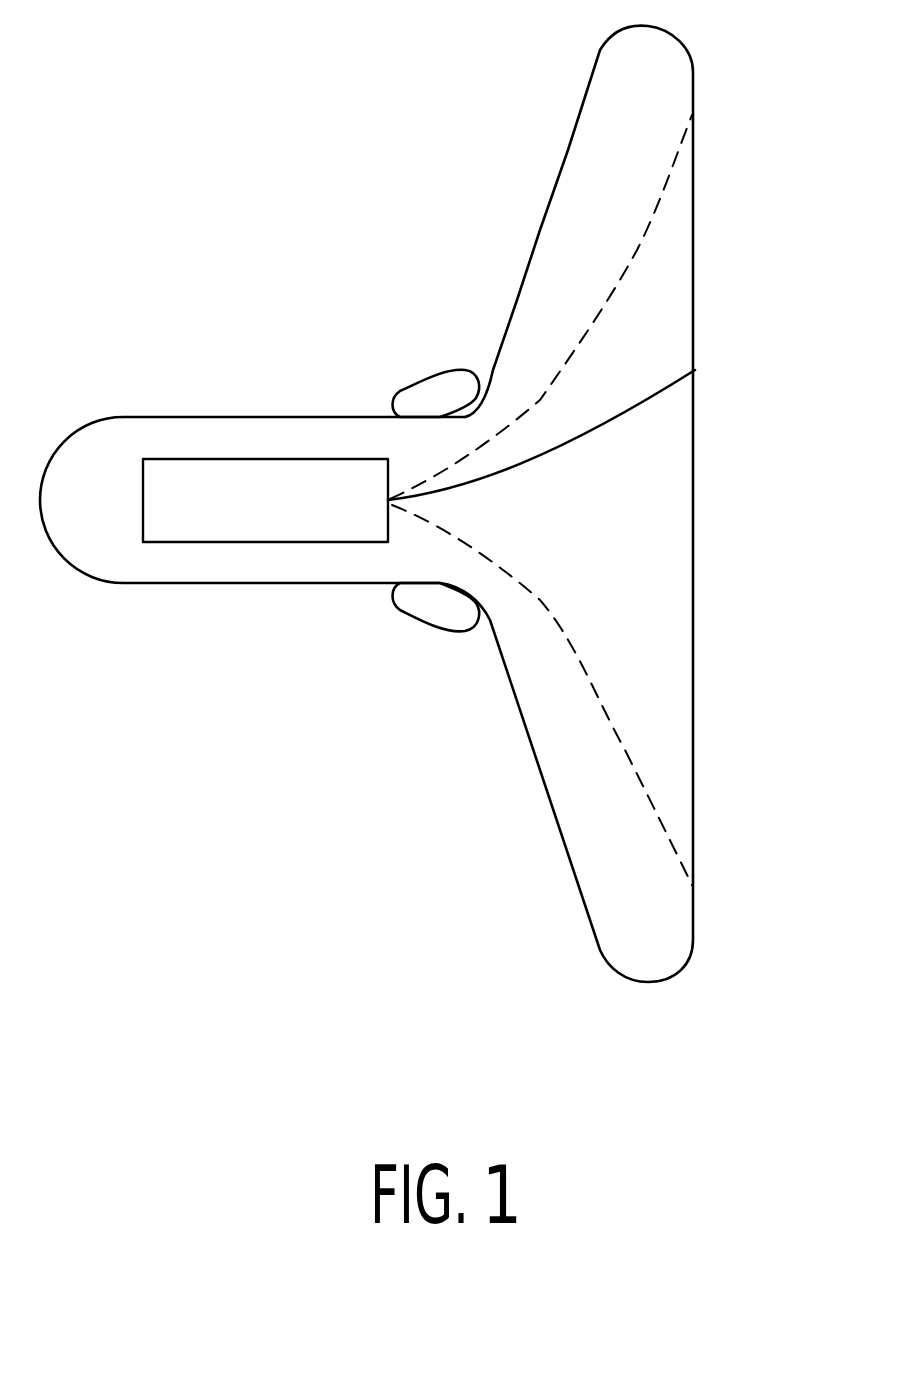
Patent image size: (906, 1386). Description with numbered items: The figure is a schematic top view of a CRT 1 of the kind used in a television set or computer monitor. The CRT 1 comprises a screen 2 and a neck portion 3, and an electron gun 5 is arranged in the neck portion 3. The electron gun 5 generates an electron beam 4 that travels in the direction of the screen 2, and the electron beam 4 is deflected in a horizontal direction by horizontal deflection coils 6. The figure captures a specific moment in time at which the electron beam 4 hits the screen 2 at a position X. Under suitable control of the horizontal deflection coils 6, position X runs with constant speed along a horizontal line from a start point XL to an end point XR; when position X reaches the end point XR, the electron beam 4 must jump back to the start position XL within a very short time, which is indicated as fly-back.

The CRT 1 is at (410, 504).
The screen 2 is at (697, 540).
The neck portion 3 is at (141, 583).
The electron beam 4 is at (650, 405).
The electron gun 5 is at (228, 542).
The horizontal deflection coils 6 is at (430, 616).